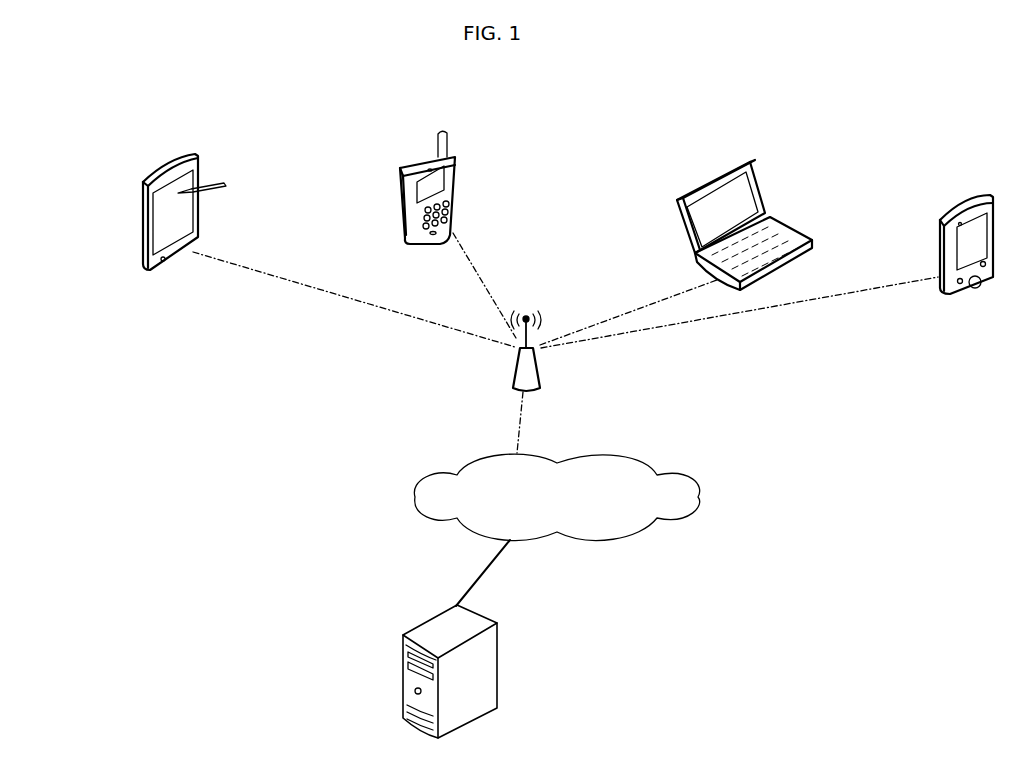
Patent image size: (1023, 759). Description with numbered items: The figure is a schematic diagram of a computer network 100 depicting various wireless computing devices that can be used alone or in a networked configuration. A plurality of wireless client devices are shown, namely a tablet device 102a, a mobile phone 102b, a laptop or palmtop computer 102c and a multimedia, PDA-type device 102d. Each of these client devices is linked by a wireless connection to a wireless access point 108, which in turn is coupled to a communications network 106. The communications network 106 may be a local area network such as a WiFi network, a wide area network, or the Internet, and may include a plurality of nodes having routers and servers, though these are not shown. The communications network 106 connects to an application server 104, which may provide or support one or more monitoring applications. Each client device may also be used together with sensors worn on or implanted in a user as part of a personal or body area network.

The computer network 100 is at (507, 78).
The tablet device 102a is at (143, 210).
The mobile phone 102b is at (400, 208).
The laptop or palmtop computer 102c is at (675, 212).
The multimedia (PDA) type device 102d is at (938, 230).
The application server 104 is at (401, 656).
The communications network 106 is at (413, 497).
The wireless access point 108 is at (541, 386).